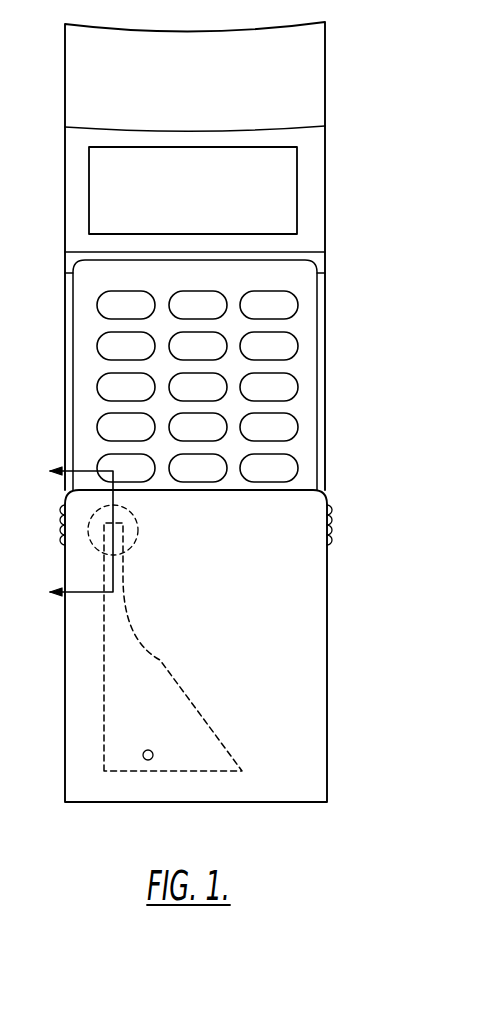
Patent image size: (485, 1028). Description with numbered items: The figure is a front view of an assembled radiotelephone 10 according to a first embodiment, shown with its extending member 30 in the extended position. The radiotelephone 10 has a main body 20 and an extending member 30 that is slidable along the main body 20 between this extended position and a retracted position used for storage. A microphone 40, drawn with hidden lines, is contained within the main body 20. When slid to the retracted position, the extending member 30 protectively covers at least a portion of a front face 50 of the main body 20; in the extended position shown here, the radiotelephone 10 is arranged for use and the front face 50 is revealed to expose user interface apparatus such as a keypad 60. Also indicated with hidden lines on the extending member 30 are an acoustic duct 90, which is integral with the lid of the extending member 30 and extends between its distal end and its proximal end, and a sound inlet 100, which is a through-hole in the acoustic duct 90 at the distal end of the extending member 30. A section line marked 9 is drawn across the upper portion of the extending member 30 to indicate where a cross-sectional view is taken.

The radiotelephone 10 is at (362, 108).
The main body 20 is at (317, 237).
The extending member 30 is at (320, 637).
The microphone 40 is at (88, 527).
The front face 50 is at (308, 430).
The keypad 60 is at (277, 347).
The acoustic duct 90 is at (115, 692).
The sound inlet 100 is at (148, 760).
The section line 9- 9 is at (74, 534).